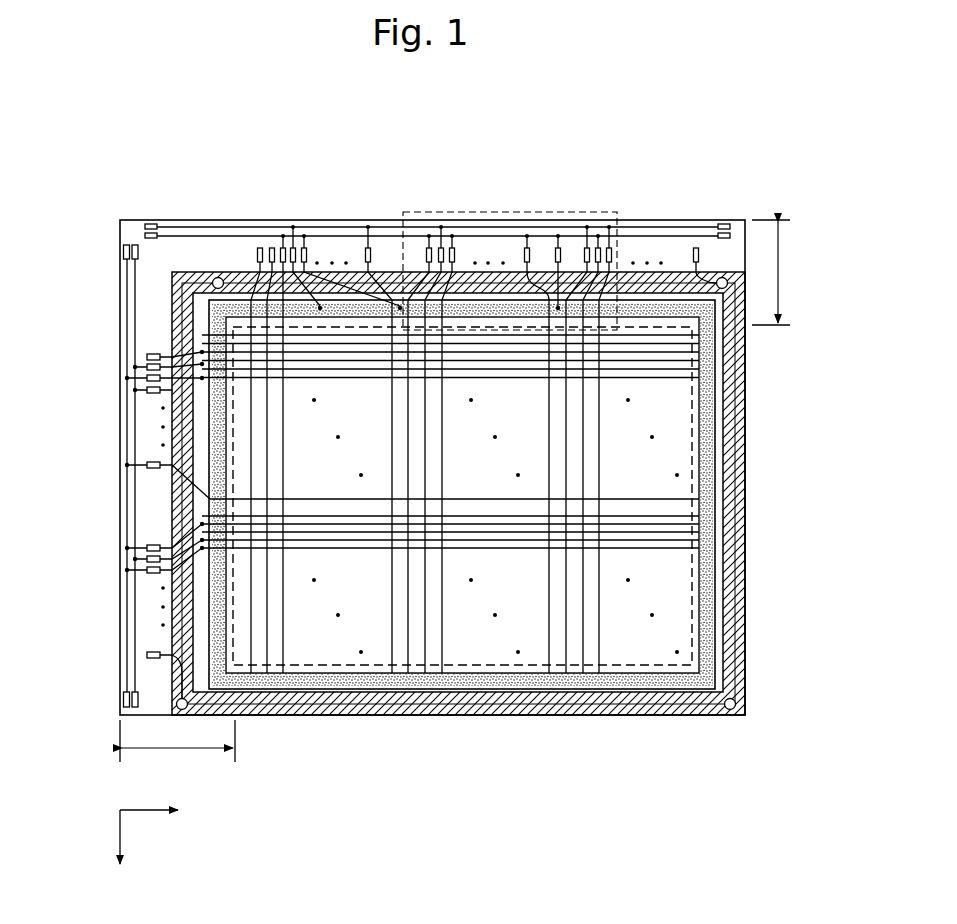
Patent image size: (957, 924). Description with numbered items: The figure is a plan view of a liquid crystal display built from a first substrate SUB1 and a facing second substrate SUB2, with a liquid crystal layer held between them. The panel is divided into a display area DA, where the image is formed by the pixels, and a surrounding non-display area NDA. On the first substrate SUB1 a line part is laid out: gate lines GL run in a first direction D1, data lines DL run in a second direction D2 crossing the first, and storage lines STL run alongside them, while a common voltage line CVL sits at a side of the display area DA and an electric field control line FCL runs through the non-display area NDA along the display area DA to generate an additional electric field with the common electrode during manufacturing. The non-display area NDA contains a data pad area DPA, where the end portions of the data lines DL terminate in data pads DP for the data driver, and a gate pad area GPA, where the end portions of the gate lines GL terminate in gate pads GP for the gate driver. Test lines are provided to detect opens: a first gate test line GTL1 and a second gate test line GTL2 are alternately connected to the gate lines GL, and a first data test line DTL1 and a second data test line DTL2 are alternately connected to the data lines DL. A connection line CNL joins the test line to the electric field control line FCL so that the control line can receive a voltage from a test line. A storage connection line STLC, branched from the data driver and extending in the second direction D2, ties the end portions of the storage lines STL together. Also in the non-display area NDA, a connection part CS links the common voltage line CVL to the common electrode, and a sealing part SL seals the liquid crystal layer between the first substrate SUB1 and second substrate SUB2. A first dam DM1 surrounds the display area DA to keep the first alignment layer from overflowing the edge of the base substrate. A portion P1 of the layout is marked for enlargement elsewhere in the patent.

The first data test line DTL1 is at (183, 235).
The second data test line DTL2 is at (244, 226).
The data pad DP is at (327, 246).
The connection line CNL is at (380, 247).
The portion P1 is at (510, 211).
The first dam DM1 is at (668, 302).
The data pad area DPA is at (785, 272).
The first substrate SUB1 is at (118, 274).
The second substrate SUB2 is at (170, 288).
The storage connection line STLC is at (216, 305).
The gate pad GP is at (147, 392).
The sealing part SL is at (172, 440).
The first gate test line GTL1 is at (137, 525).
The second gate test line GTL2 is at (129, 496).
The gate line GL is at (325, 371).
The storage line STL is at (364, 379).
The data line DL is at (287, 452).
The electric field control line FCL is at (704, 426).
The display area DA is at (693, 473).
The common voltage line CVL is at (717, 536).
The non-display area NDA is at (741, 601).
The connection part CS is at (736, 705).
The gate pad area GPA is at (177, 749).
The first direction D1 is at (163, 810).
The second direction D2 is at (117, 852).